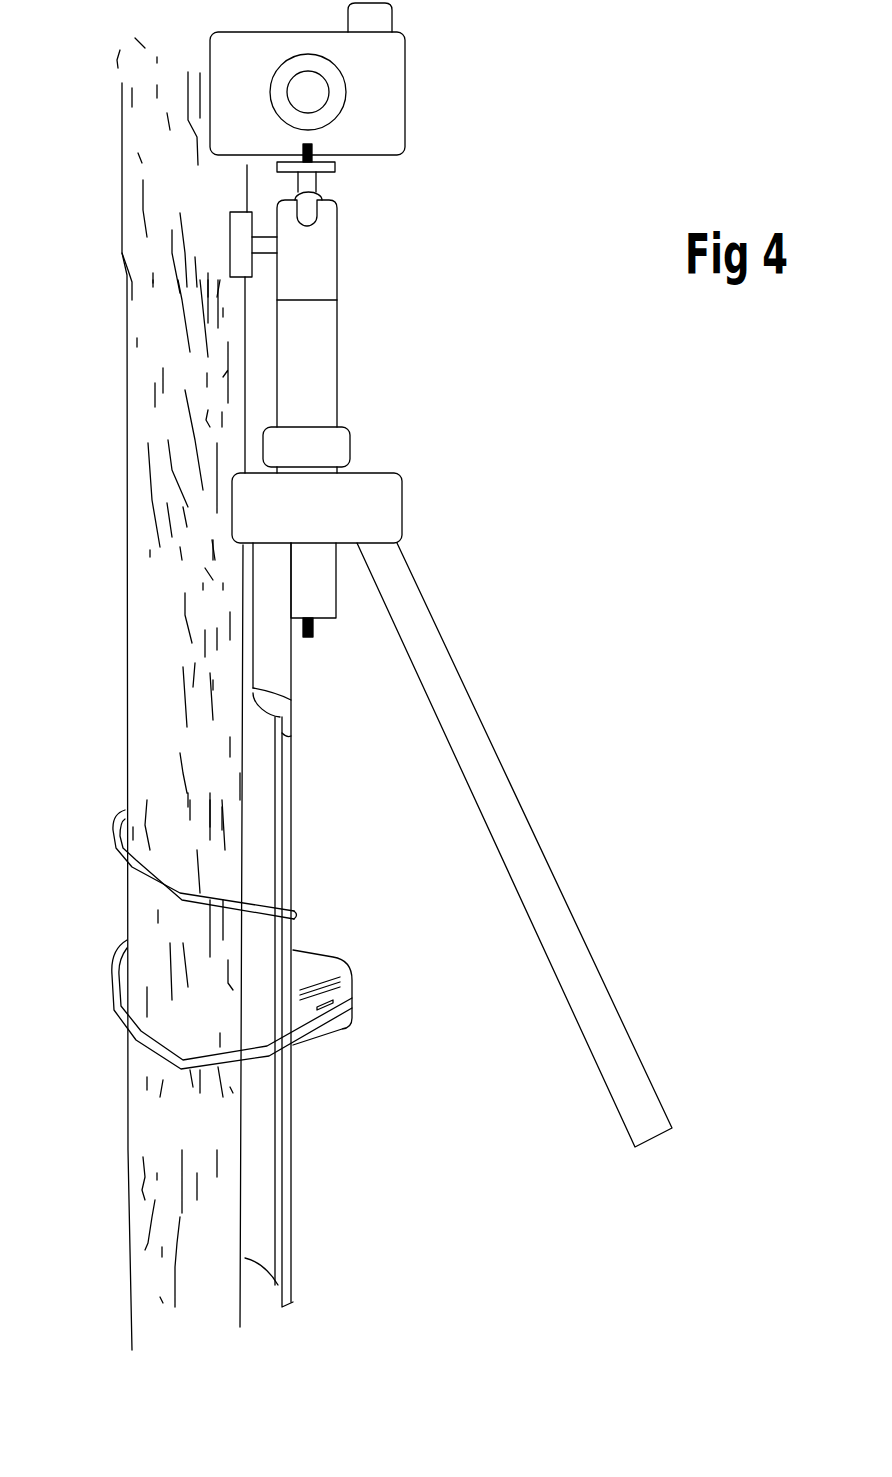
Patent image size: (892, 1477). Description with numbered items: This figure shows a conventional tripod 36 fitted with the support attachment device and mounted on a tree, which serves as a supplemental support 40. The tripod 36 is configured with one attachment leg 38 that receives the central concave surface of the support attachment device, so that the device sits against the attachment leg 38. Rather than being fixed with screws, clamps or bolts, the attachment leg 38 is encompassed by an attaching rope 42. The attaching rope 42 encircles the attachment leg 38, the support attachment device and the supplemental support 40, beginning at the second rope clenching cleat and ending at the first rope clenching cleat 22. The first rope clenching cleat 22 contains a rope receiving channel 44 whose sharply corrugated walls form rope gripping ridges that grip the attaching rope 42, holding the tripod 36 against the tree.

The first rope clenching cleat 22 is at (352, 1027).
The tripod 36 is at (377, 492).
The attachment leg 38 is at (267, 660).
The supplemental support 40 is at (135, 1228).
The attaching rope 42 is at (297, 917).
The rope receiving channel 44 is at (348, 1002).